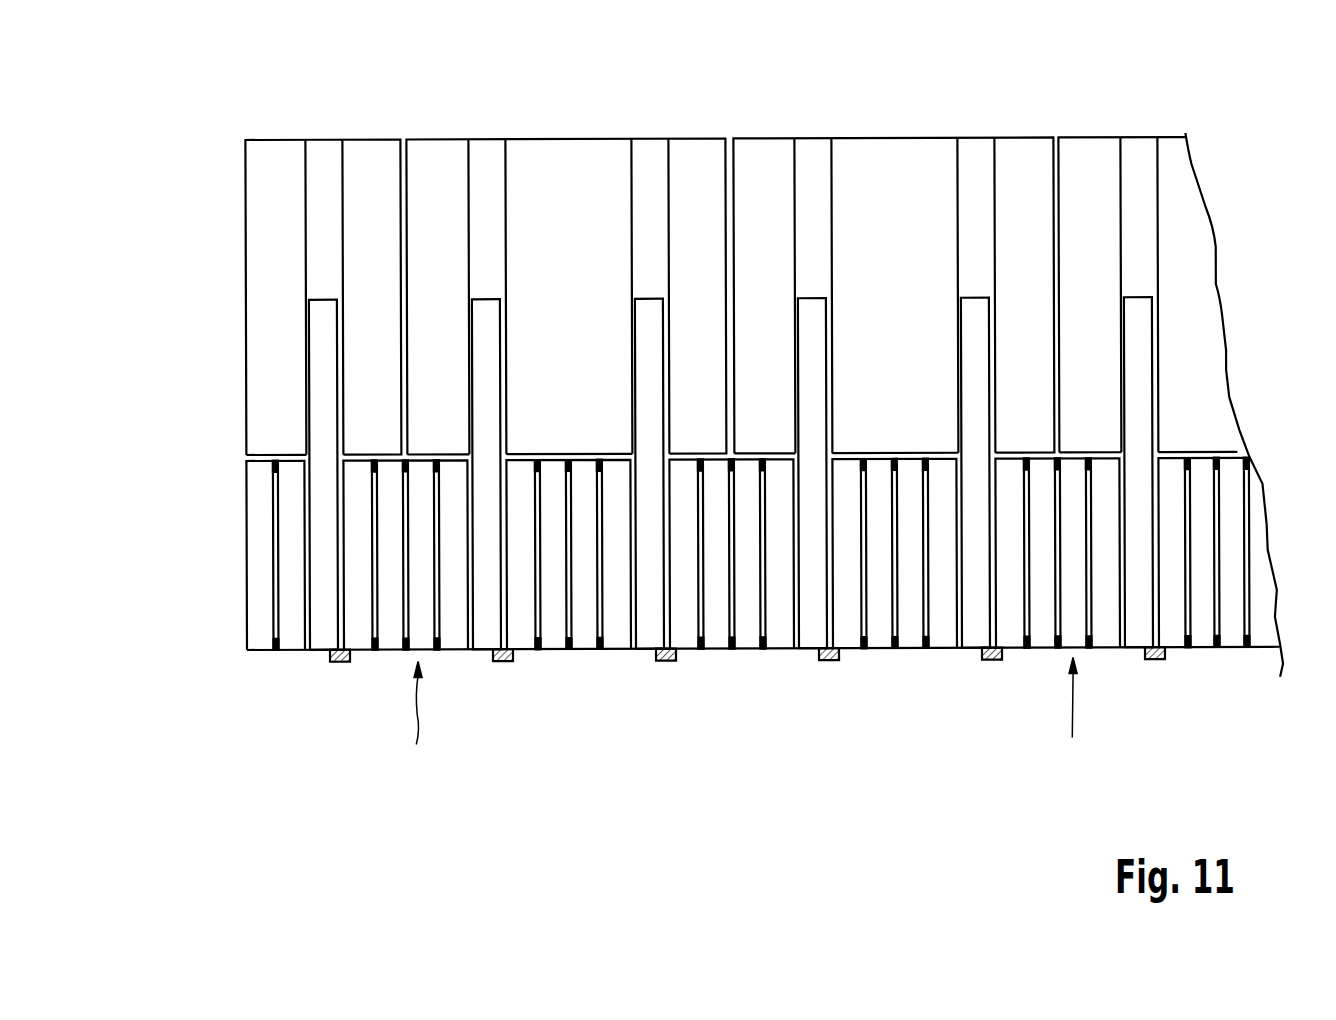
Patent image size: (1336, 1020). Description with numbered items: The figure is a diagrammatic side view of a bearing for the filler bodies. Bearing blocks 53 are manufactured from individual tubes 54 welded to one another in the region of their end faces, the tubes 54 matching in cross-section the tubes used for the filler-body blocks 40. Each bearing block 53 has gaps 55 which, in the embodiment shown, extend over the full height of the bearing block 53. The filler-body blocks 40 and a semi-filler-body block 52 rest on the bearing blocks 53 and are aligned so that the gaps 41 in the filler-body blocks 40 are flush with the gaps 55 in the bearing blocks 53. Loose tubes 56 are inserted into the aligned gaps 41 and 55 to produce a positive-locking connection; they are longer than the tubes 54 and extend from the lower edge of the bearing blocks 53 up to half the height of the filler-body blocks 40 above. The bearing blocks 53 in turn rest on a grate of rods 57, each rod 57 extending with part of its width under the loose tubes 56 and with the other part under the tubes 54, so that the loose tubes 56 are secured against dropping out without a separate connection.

The filler-body block 40 is at (573, 180).
The gap 41 is at (307, 179).
The semi-filler-body block 52 is at (272, 163).
The bearing block 53 is at (747, 720).
The tube 54 is at (290, 560).
The gap 55 is at (357, 612).
The loose tube 56 is at (330, 368).
The rod 57 is at (665, 663).